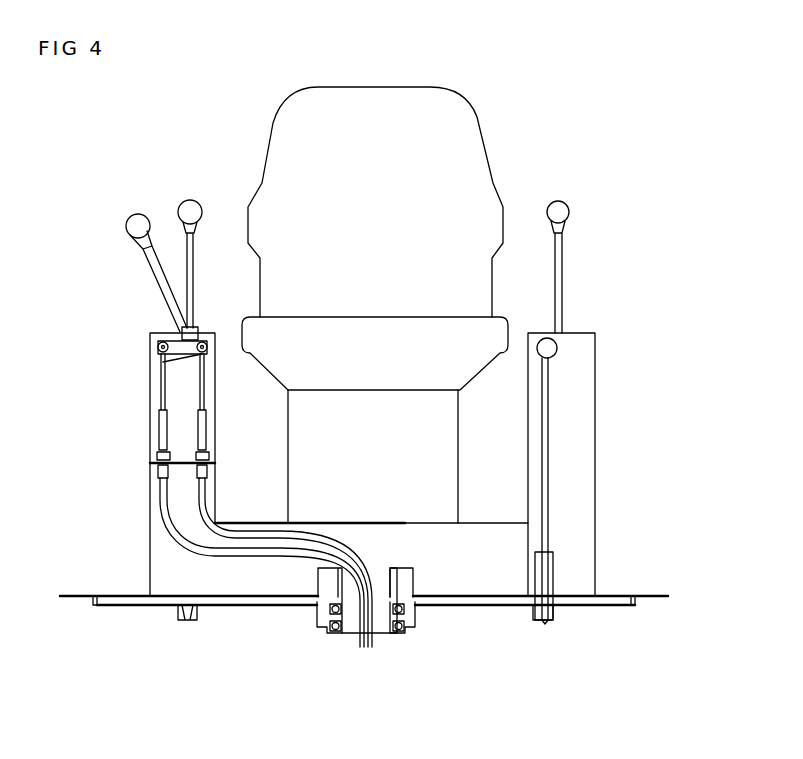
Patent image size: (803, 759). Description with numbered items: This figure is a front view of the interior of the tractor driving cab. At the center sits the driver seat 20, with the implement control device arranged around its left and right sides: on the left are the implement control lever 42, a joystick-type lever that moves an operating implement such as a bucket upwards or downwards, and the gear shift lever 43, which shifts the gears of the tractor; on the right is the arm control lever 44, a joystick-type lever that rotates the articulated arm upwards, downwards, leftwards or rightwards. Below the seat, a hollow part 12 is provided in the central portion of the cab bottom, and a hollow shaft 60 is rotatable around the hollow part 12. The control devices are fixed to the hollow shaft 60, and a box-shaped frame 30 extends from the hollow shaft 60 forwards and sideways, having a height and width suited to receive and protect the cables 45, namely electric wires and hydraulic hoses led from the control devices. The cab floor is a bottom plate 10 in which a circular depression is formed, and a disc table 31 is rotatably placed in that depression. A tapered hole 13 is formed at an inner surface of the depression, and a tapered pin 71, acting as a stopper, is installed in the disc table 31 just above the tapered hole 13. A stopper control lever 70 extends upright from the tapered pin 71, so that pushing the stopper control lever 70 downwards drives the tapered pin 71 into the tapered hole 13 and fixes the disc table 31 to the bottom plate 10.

The bottom plate 10 is at (660, 592).
The hollow part 12 is at (422, 622).
The tapered hole 13 is at (177, 613).
The driver seat 20 is at (468, 136).
The box-shaped frame 30 is at (250, 520).
The disc table 31 is at (615, 592).
The implement control lever 42 is at (153, 268).
The gear shift lever 43 is at (192, 296).
The arm control lever 44 is at (561, 259).
The cables 45 is at (187, 547).
The hollow shaft 60 is at (318, 578).
The stopper control lever 70 is at (548, 428).
The tapered pin 71 is at (545, 622).